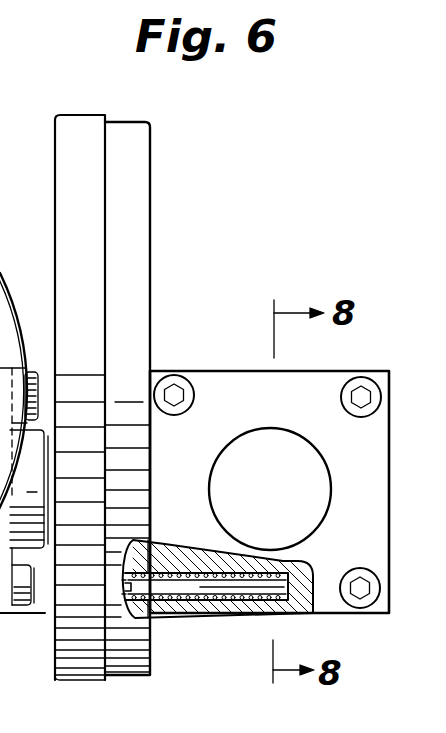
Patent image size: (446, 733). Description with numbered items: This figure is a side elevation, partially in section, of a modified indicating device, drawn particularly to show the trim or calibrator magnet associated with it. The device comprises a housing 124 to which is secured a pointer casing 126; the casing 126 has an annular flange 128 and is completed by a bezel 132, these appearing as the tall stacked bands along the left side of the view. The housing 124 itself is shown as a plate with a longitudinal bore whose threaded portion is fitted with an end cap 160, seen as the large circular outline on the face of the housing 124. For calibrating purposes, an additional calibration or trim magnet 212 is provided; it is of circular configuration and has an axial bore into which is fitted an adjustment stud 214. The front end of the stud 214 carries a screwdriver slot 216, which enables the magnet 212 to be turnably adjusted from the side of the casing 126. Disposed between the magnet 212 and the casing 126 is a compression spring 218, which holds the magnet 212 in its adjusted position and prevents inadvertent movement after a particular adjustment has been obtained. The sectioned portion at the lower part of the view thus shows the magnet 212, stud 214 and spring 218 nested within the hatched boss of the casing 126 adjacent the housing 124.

The housing 124 is at (230, 380).
The pointer casing 126 is at (148, 540).
The annular flange 128 is at (133, 132).
The bezel 132 is at (68, 122).
The end cap 160 is at (275, 443).
The calibration or trim magnet 212 is at (255, 600).
The adjustment stud 214 is at (200, 588).
The screwdriver slot 216 is at (123, 588).
The compression spring 218 is at (167, 600).